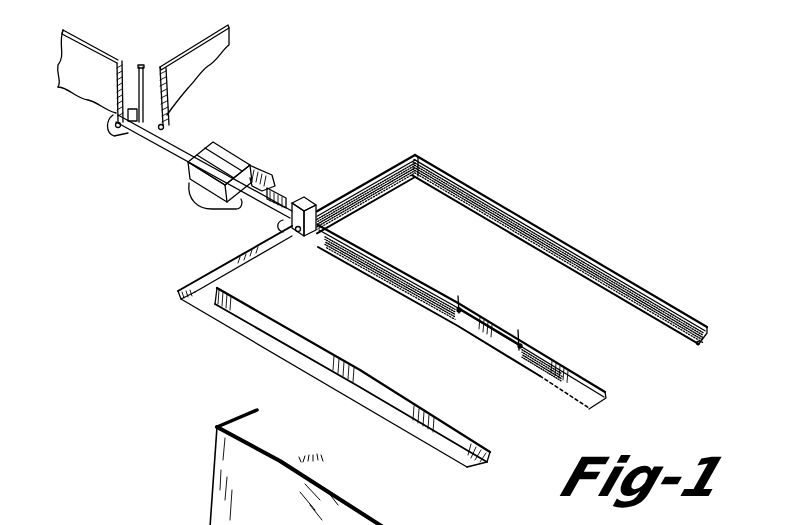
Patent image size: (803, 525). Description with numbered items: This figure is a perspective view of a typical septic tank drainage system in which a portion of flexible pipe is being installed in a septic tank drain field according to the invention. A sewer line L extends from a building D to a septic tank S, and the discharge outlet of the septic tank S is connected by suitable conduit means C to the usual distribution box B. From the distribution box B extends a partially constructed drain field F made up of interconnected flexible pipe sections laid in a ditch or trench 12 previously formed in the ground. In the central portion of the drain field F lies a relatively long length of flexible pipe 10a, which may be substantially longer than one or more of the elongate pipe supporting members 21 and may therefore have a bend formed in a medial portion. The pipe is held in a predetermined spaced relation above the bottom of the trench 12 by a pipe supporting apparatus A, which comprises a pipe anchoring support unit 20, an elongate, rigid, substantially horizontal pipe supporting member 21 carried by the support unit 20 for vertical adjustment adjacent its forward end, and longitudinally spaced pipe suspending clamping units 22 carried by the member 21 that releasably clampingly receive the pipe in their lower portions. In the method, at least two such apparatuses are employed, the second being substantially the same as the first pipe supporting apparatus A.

The building D is at (218, 66).
The sewer line L is at (162, 138).
The septic tank S is at (212, 148).
The conduit means C is at (243, 208).
The distribution box B is at (303, 197).
The drain field F is at (588, 248).
The ditch or trench 12 is at (628, 280).
The relatively long length of flexible pipe 10a is at (528, 368).
The pipe anchoring support unit 20 is at (466, 303).
The pipe supporting member 21 is at (497, 318).
The first pipe supporting apparatus A is at (174, 512).
The pipe suspending clamping units 22 is at (230, 467).